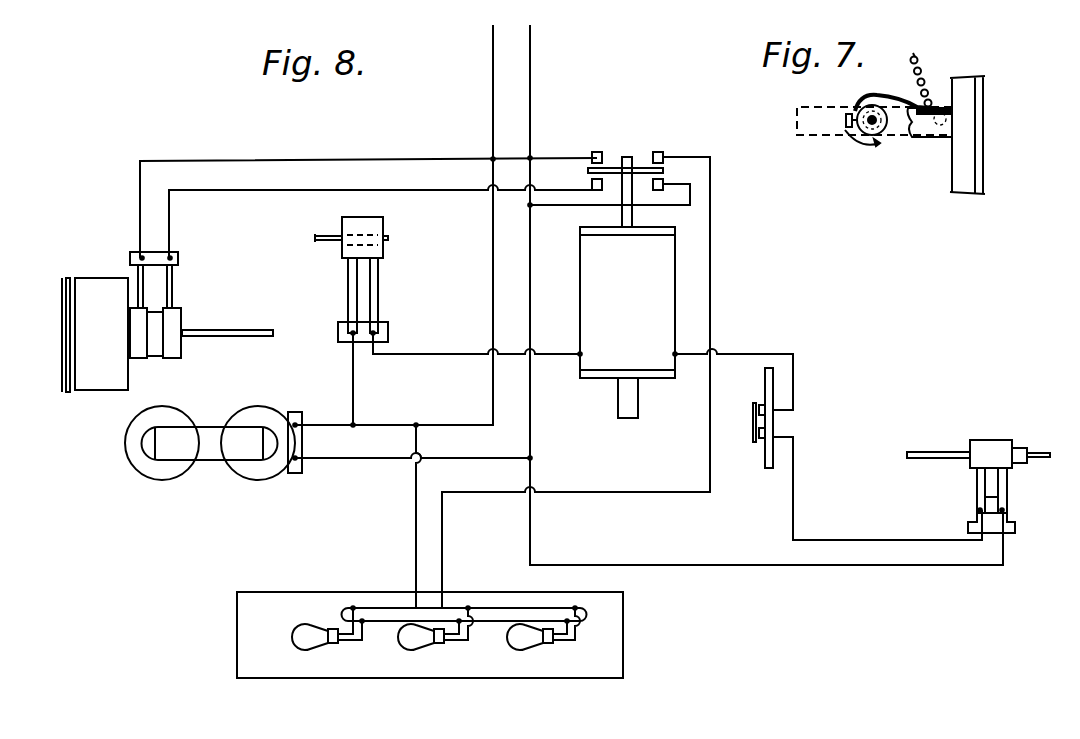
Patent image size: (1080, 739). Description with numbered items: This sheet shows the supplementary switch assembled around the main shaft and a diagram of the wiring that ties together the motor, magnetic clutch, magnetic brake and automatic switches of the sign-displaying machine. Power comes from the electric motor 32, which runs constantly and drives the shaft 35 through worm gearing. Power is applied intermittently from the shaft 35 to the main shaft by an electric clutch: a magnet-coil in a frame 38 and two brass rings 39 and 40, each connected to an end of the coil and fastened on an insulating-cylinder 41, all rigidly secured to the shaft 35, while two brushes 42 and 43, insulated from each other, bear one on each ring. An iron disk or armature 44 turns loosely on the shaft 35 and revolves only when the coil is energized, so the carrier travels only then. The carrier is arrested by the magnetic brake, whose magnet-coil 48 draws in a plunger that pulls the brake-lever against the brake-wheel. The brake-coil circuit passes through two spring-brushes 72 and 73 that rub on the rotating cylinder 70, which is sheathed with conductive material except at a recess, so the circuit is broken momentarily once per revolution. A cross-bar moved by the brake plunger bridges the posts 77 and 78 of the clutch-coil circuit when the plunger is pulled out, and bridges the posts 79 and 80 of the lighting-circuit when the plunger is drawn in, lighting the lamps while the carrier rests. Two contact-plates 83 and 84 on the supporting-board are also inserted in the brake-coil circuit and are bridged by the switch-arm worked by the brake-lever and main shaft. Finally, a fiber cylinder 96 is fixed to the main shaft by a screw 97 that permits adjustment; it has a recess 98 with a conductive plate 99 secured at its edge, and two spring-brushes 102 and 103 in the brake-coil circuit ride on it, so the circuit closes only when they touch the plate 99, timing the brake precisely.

In FIG. 8, the electric motor 32 is at (213, 443).
In FIG. 8, the shaft 35 is at (226, 335).
In FIG. 8, the magnet-coil frame 38 is at (101, 334).
In FIG. 8, the brass ring 39 is at (143, 357).
In FIG. 8, the brass ring 40 is at (175, 358).
In FIG. 8, the insulating-cylinder 41 is at (157, 353).
In FIG. 8, the brush 42 is at (142, 280).
In FIG. 8, the brush 43 is at (170, 292).
In FIG. 8, the armature 44 is at (66, 336).
In FIG. 8, the magnet-coil 48 is at (627, 287).
In FIG. 8, the cylinder 70 is at (385, 250).
In FIG. 8, the spring-brush 72 is at (349, 296).
In FIG. 8, the spring-brush 73 is at (376, 297).
In FIG. 8, the post 77 is at (592, 184).
In FIG. 8, the post 78 is at (664, 182).
In FIG. 8, the post 79 is at (600, 145).
In FIG. 8, the post 80 is at (658, 152).
In FIG. 8, the contact-plate 83 is at (759, 410).
In FIG. 8, the contact-plate 84 is at (759, 438).
In FIG. 7, the fiber cylinder 96 is at (870, 132).
In FIG. 7, the screw 97 is at (849, 127).
In FIG. 7, the recess 98 is at (877, 112).
In FIG. 7, the conductive plate 99 is at (857, 108).
In FIG. 8, the spring-brush 102 is at (977, 488).
In FIG. 7, the spring-brush 102 is at (922, 100).
In FIG. 8, the spring-brush 103 is at (1007, 492).